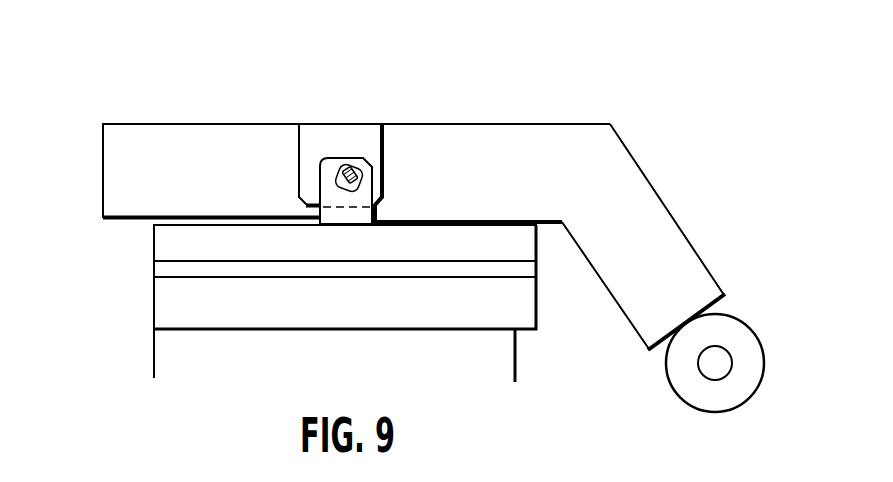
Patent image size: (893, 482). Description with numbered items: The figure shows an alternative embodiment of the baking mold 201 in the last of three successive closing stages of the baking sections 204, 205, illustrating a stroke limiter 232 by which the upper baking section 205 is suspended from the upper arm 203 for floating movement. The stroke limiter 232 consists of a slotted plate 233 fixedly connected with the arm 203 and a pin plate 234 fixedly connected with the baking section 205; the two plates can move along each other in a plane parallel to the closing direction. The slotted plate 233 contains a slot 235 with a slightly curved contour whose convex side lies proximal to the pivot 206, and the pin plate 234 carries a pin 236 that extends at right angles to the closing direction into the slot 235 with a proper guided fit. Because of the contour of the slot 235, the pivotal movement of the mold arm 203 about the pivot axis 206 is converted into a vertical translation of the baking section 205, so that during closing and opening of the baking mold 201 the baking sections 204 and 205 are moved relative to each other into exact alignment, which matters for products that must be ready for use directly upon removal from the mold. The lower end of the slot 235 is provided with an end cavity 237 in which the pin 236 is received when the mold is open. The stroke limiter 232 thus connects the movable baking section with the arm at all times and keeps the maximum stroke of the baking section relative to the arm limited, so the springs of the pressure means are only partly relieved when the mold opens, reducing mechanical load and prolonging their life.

The baking mold 201 is at (525, 118).
The upper arm 203 is at (657, 257).
The baking section 204 is at (165, 300).
The upper baking section 205 is at (168, 244).
The pivot 206 is at (720, 357).
The stroke limiter 232 is at (332, 117).
The slotted plate 233 is at (368, 143).
The pin plate 234 is at (376, 213).
The slot 235 is at (343, 166).
The pin 236 is at (342, 178).
The end cavity 237 is at (338, 188).